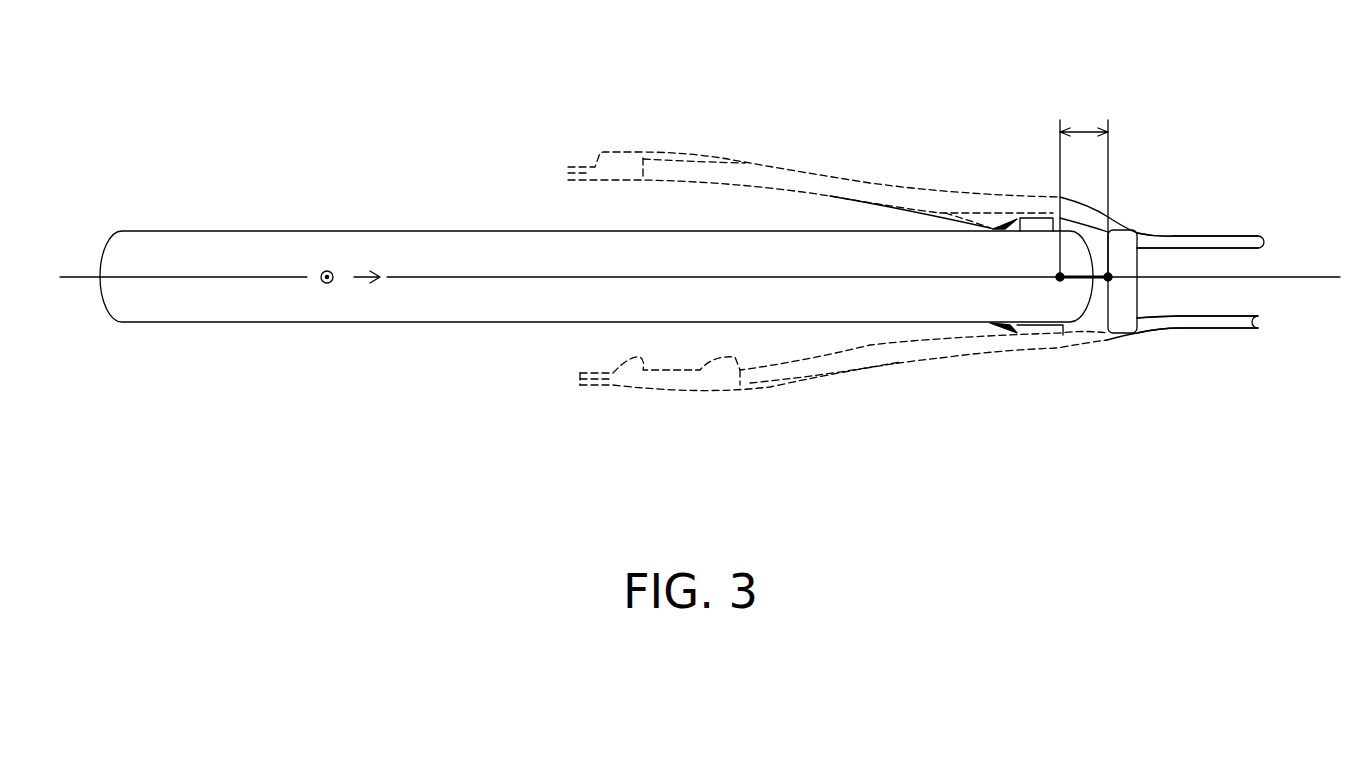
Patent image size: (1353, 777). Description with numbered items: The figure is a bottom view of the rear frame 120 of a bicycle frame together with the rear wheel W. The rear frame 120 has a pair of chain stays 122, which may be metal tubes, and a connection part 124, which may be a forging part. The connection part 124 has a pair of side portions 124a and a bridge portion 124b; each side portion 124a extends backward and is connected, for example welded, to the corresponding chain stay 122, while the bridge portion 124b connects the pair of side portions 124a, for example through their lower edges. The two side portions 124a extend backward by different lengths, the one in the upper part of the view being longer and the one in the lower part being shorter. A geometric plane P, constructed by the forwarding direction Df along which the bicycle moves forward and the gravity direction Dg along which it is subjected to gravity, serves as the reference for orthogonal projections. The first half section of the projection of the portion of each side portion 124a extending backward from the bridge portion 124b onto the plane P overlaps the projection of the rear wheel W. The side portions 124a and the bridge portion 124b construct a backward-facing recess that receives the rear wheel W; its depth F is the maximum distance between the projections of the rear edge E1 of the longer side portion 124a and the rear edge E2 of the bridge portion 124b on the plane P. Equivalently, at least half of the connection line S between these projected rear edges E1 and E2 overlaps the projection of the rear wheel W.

The rear frame 120 is at (572, 80).
The chain stays 122 is at (732, 168).
The connection part 124 is at (1198, 269).
The side portions 124a is at (1173, 236).
The bridge portion 124b is at (1137, 285).
The rear wheel W is at (466, 312).
The forwarding direction Df is at (370, 261).
The gravity direction Dg is at (329, 284).
The rear edge of the side portion E1 is at (1058, 197).
The rear edge of the bridge portion E2 is at (1107, 280).
The depth of the recess F is at (1084, 113).
The connection line S is at (1080, 282).
The geometric plane P is at (1300, 277).